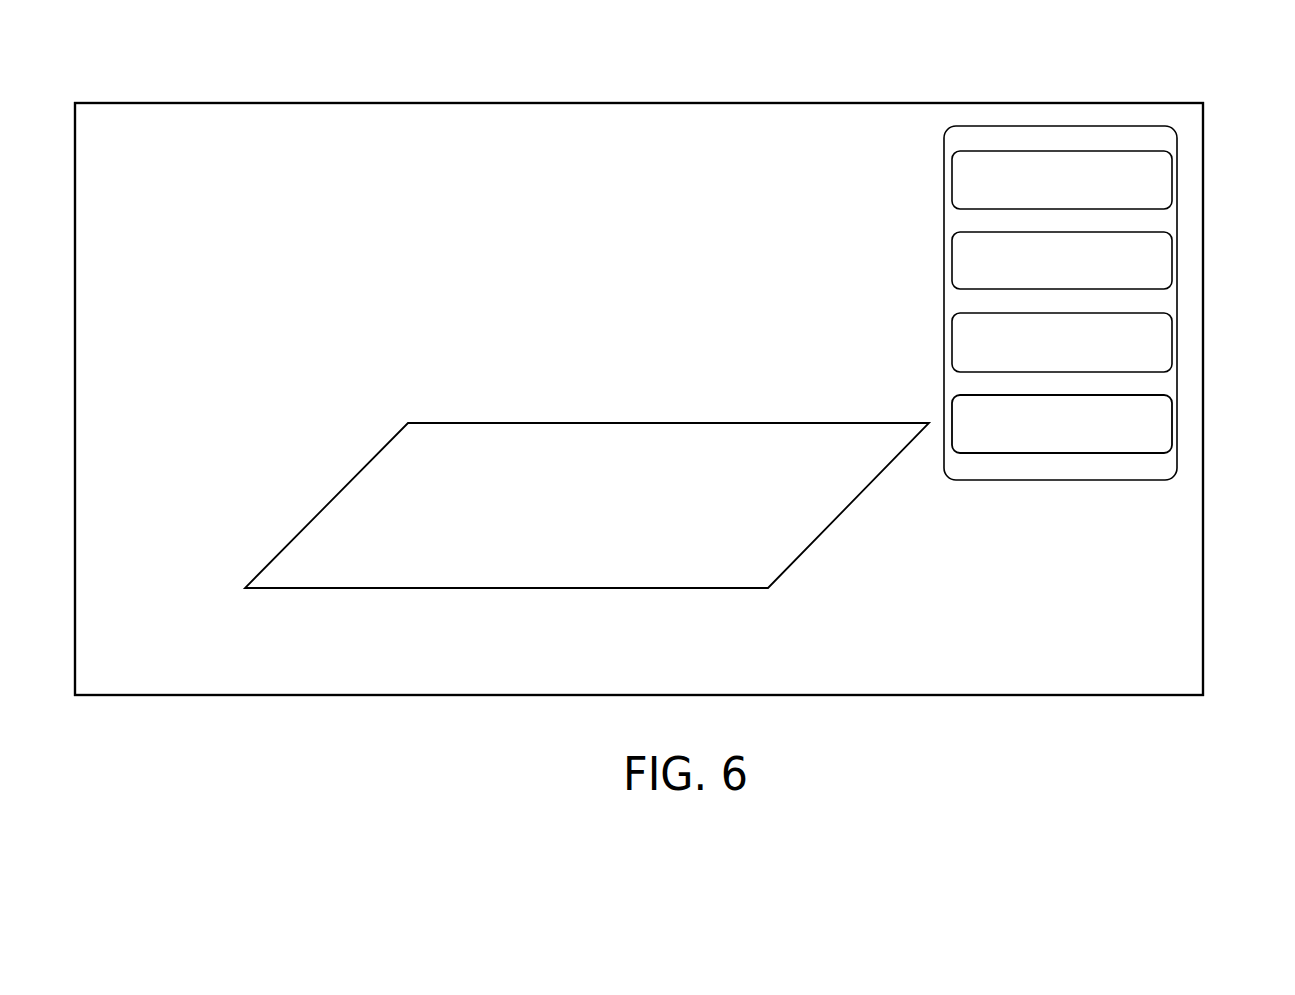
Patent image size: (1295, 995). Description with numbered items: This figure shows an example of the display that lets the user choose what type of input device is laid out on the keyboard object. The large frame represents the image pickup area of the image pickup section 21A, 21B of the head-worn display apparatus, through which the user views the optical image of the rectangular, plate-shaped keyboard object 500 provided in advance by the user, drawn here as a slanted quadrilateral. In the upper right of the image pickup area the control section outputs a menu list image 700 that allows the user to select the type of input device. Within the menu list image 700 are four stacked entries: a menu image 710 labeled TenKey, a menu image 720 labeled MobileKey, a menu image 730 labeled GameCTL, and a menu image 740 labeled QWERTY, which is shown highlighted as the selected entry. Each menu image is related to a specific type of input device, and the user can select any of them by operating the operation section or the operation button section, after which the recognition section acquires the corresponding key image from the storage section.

The image pickup section 21A is at (707, 103).
The image pickup section 21B is at (639, 399).
The keyboard object 500 is at (681, 421).
The menu list image 700 is at (1072, 126).
The menu image 710 is at (1172, 182).
The menu image 720 is at (1172, 262).
The menu image 730 is at (1172, 343).
The menu image 740 is at (1172, 425).